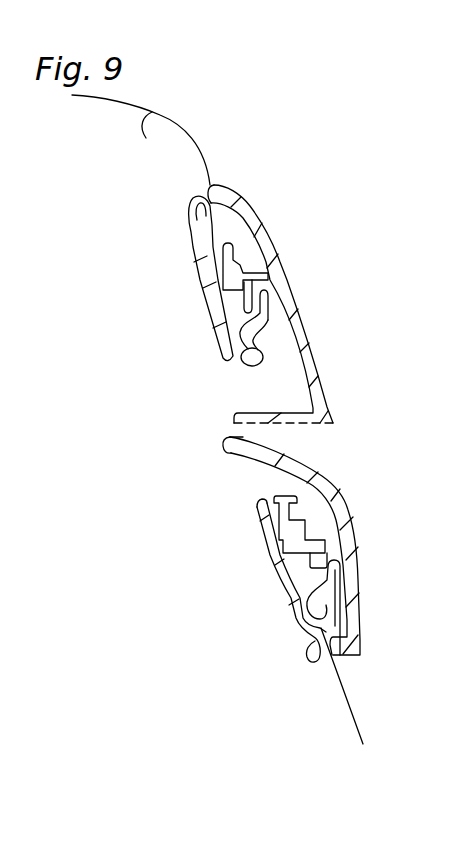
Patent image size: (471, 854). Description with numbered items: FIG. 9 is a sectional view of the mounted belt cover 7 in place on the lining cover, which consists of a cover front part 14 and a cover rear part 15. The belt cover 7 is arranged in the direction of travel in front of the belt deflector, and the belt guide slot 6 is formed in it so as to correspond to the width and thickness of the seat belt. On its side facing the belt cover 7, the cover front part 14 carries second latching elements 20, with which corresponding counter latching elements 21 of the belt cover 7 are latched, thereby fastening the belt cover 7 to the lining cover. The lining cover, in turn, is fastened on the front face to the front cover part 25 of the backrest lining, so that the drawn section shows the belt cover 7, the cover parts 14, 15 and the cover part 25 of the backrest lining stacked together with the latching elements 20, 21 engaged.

The belt guide slot 6 is at (260, 437).
The belt cover 7 is at (320, 347).
The cover front part 14 is at (233, 343).
The cover rear part 15 is at (205, 293).
The second latching elements 20 is at (268, 306).
The counter latching elements 21 is at (250, 304).
The front cover part 25 is at (113, 101).